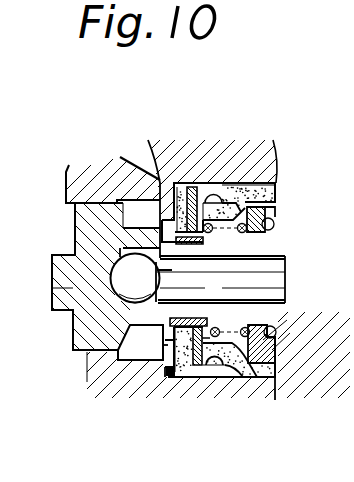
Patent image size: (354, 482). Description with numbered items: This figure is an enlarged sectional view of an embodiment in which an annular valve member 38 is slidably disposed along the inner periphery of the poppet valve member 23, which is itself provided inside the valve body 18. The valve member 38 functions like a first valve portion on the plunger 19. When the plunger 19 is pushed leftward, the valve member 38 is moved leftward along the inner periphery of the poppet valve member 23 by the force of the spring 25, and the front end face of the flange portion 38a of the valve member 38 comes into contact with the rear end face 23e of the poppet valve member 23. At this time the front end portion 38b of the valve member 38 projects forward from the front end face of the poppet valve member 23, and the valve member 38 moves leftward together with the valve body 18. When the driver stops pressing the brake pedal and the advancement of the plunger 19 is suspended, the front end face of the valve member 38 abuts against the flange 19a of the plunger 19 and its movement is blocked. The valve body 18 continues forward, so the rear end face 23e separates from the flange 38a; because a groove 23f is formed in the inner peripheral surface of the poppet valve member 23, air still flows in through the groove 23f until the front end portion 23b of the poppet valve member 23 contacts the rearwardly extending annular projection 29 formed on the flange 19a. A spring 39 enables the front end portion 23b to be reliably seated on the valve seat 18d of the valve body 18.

The valve body 18 is at (134, 377).
The valve seat 18d is at (170, 380).
The plunger 19 is at (52, 288).
The flange 19a is at (120, 231).
The poppet valve member 23 is at (248, 185).
The front end portion 23b is at (192, 158).
The rear end face 23e is at (208, 196).
The groove 23f is at (201, 184).
The spring 25 is at (292, 240).
The annular projection 29 is at (164, 182).
The annular valve member 38 is at (197, 247).
The flange portion 38a is at (210, 241).
The front end portion 38b is at (126, 166).
The spring 39 is at (214, 370).